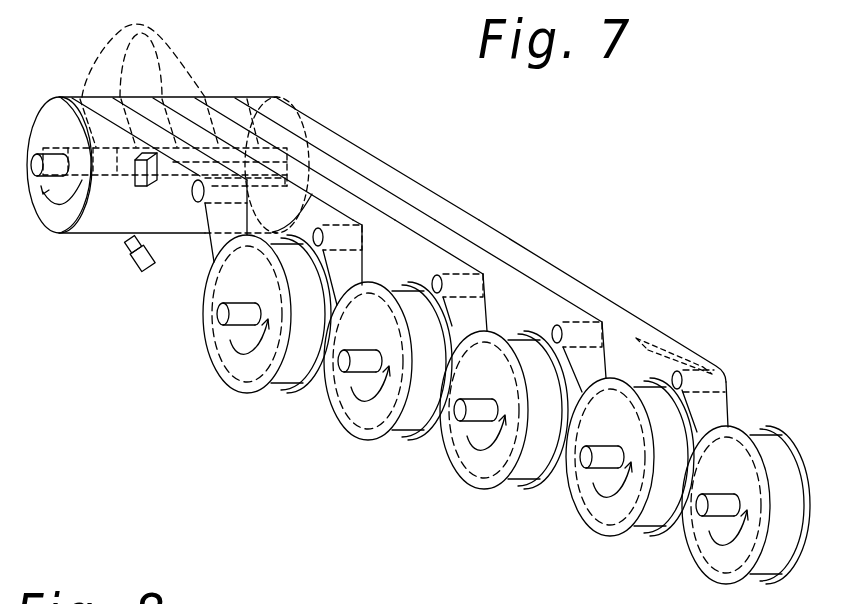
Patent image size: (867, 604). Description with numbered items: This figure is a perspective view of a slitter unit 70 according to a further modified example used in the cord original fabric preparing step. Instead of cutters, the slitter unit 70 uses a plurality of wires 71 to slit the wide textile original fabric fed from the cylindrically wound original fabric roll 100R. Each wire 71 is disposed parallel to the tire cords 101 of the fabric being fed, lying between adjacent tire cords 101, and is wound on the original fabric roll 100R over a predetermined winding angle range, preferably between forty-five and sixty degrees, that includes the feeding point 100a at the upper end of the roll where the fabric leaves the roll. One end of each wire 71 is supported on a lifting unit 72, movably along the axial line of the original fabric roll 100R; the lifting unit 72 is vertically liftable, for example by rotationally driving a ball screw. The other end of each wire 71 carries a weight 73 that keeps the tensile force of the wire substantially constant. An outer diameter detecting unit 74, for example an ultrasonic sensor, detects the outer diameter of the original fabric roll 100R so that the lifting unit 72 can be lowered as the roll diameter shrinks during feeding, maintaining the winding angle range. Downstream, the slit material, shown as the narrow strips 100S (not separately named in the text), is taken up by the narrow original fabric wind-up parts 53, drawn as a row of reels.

The narrow original fabric wind-up part 53 is at (297, 420).
The slitter unit 70 is at (501, 328).
The wire 71 is at (124, 60).
The lifting unit 72 is at (57, 146).
The weight 73 is at (150, 184).
The outer diameter detecting unit 74 is at (143, 272).
The feeding point 100a is at (252, 97).
The strip 100S is at (343, 152).
The original fabric roll 100R is at (88, 222).
The tire cord 101 is at (691, 344).